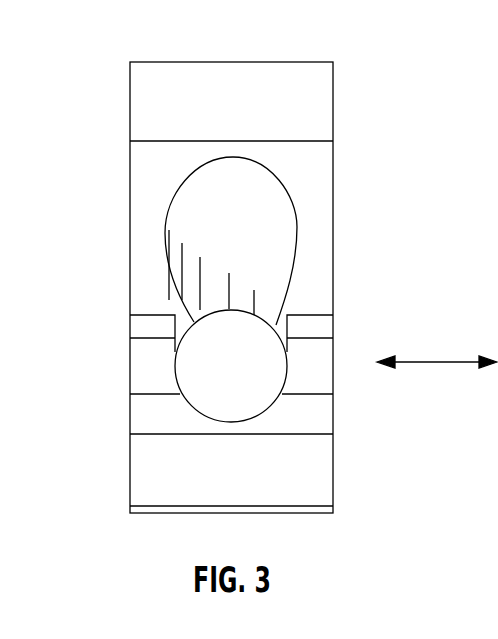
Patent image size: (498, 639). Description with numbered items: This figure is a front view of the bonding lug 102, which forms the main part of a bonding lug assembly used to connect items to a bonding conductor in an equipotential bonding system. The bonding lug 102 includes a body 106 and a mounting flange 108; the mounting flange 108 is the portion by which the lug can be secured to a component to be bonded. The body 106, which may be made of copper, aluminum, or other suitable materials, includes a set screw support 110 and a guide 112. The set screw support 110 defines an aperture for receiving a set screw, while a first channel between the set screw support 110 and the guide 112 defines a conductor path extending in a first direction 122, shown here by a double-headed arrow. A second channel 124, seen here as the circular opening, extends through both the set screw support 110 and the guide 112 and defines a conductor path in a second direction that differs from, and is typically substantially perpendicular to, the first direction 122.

The bonding lug 102 is at (100, 55).
The set screw support 110 is at (143, 107).
The guide 112 is at (141, 356).
The body 106 is at (146, 410).
The mounting flange 108 is at (158, 466).
The first direction 122 is at (437, 360).
The second channel 124 is at (243, 341).